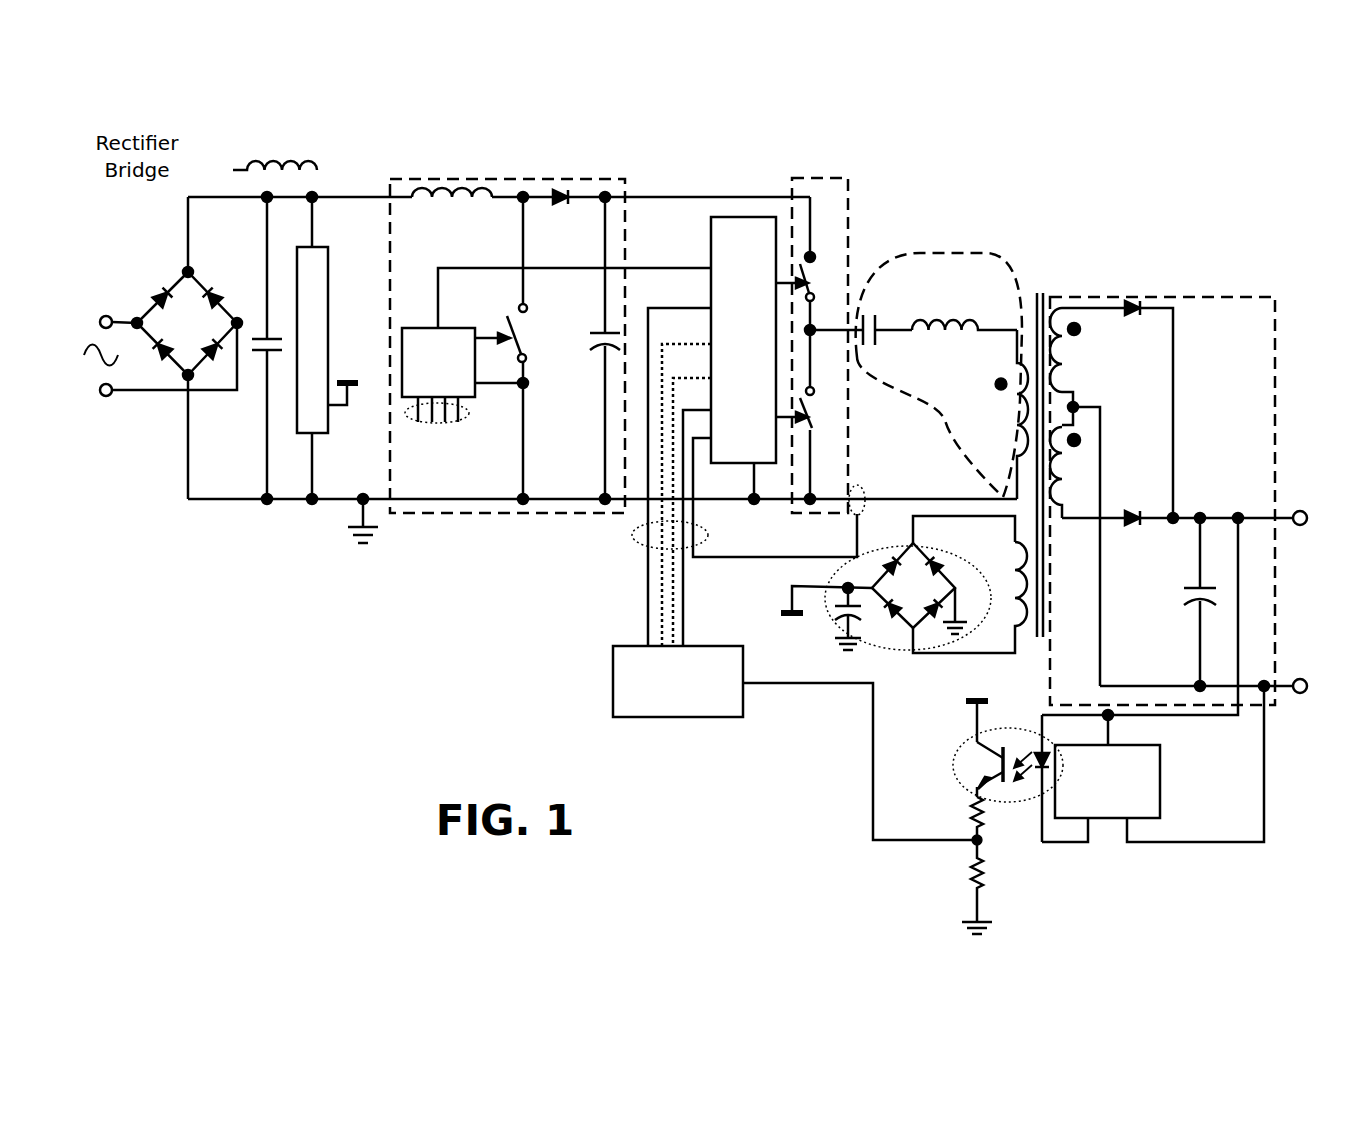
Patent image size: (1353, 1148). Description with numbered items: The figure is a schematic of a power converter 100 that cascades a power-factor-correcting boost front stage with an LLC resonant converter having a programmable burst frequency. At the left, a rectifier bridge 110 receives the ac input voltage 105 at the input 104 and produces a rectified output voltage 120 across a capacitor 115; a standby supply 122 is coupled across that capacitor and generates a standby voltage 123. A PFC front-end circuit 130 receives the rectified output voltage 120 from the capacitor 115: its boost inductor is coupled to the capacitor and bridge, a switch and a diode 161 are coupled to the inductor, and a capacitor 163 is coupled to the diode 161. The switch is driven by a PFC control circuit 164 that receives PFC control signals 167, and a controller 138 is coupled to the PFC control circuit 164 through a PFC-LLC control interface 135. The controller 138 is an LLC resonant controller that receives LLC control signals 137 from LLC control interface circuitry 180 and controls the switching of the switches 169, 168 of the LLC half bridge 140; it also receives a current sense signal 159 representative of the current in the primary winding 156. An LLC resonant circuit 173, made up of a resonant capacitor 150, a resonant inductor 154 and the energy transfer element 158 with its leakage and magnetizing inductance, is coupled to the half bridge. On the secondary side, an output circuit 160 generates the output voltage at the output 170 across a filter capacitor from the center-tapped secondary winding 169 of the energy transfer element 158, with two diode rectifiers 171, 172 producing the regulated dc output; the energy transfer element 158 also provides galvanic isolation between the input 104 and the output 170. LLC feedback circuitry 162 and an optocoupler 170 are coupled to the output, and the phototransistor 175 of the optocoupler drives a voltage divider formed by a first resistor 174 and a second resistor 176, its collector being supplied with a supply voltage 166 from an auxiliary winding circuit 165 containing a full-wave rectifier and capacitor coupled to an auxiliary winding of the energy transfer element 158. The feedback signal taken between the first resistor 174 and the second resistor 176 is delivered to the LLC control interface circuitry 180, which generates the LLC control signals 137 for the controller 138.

The power converter 100 is at (155, 82).
The input 104 is at (123, 402).
The VAC 105 is at (114, 274).
The rectifier bridge 110 is at (180, 262).
The capacitor 115 is at (261, 322).
The rectified output VRECT 120 is at (278, 123).
The standby supply 122 is at (322, 242).
The standby voltage Vstandby 123 is at (347, 278).
The PFC front-end circuit 130 is at (440, 167).
The PFC-LLC control interface 135 is at (677, 262).
The LLC control signals 137 is at (627, 545).
The controller 138 is at (727, 208).
The LLC half bridge 140 is at (828, 170).
The capacitor Cres 150 is at (880, 310).
The inductor Lres 154 is at (945, 313).
The primary winding 156 is at (1007, 412).
The energy transfer element T1 158 is at (1047, 282).
The current sense signal Isense 159 is at (893, 476).
The output circuit 160 is at (1238, 288).
The diode 161 is at (562, 207).
The LLC feedback circuitry 162 is at (1165, 795).
The capacitor 163 is at (600, 355).
The PFC control circuit 164 is at (440, 327).
The auxiliary winding circuit 165 is at (992, 581).
The voltage VDD 166 is at (770, 623).
The PFC control signals 167 is at (455, 473).
The switch 168 is at (817, 420).
The switch / center-tapped secondary winding 169 is at (822, 266).
The output / optocoupler 170 is at (1283, 507).
The diode rectifier 171 is at (1134, 313).
The diode rectifier 172 is at (1125, 535).
The LLC resonant circuit 173 is at (962, 254).
The resistor R1 174 is at (970, 815).
The phototransistor 175 is at (970, 767).
The resistor R2 176 is at (970, 883).
The LLC control interface circuitry 180 is at (648, 722).